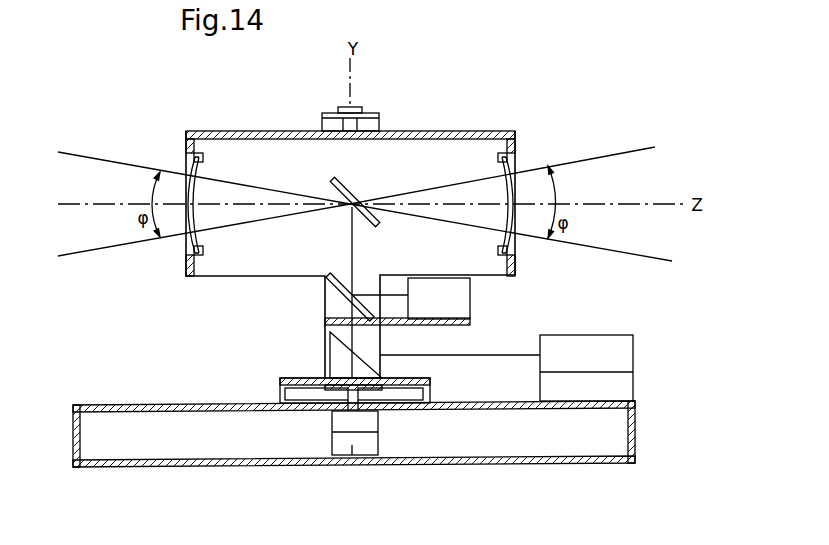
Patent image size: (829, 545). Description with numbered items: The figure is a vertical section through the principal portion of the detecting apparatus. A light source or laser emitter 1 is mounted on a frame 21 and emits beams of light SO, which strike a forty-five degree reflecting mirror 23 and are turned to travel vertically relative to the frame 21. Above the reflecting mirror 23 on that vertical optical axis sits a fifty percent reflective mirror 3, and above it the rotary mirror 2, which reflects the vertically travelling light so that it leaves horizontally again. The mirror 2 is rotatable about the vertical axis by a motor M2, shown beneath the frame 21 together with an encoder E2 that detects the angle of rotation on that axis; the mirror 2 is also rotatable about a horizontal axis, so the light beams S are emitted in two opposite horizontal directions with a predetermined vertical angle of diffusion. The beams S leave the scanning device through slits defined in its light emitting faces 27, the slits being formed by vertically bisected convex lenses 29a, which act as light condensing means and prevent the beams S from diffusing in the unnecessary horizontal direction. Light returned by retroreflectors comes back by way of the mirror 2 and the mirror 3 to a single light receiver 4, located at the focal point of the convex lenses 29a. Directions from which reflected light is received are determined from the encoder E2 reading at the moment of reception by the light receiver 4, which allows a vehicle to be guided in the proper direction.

The laser emitter 1 is at (595, 338).
The mirror 2 is at (348, 188).
The 50% reflective mirror 3 is at (336, 289).
The light receiver 4 is at (467, 310).
The frame 21 is at (636, 443).
The reflecting mirror 23 is at (333, 352).
The light emitting faces 27 is at (177, 253).
The convex lenses 29a is at (183, 187).
The light beams S is at (97, 185).
The beams of light SO is at (495, 356).
The motor M2 is at (373, 418).
The encoder E2 is at (353, 445).